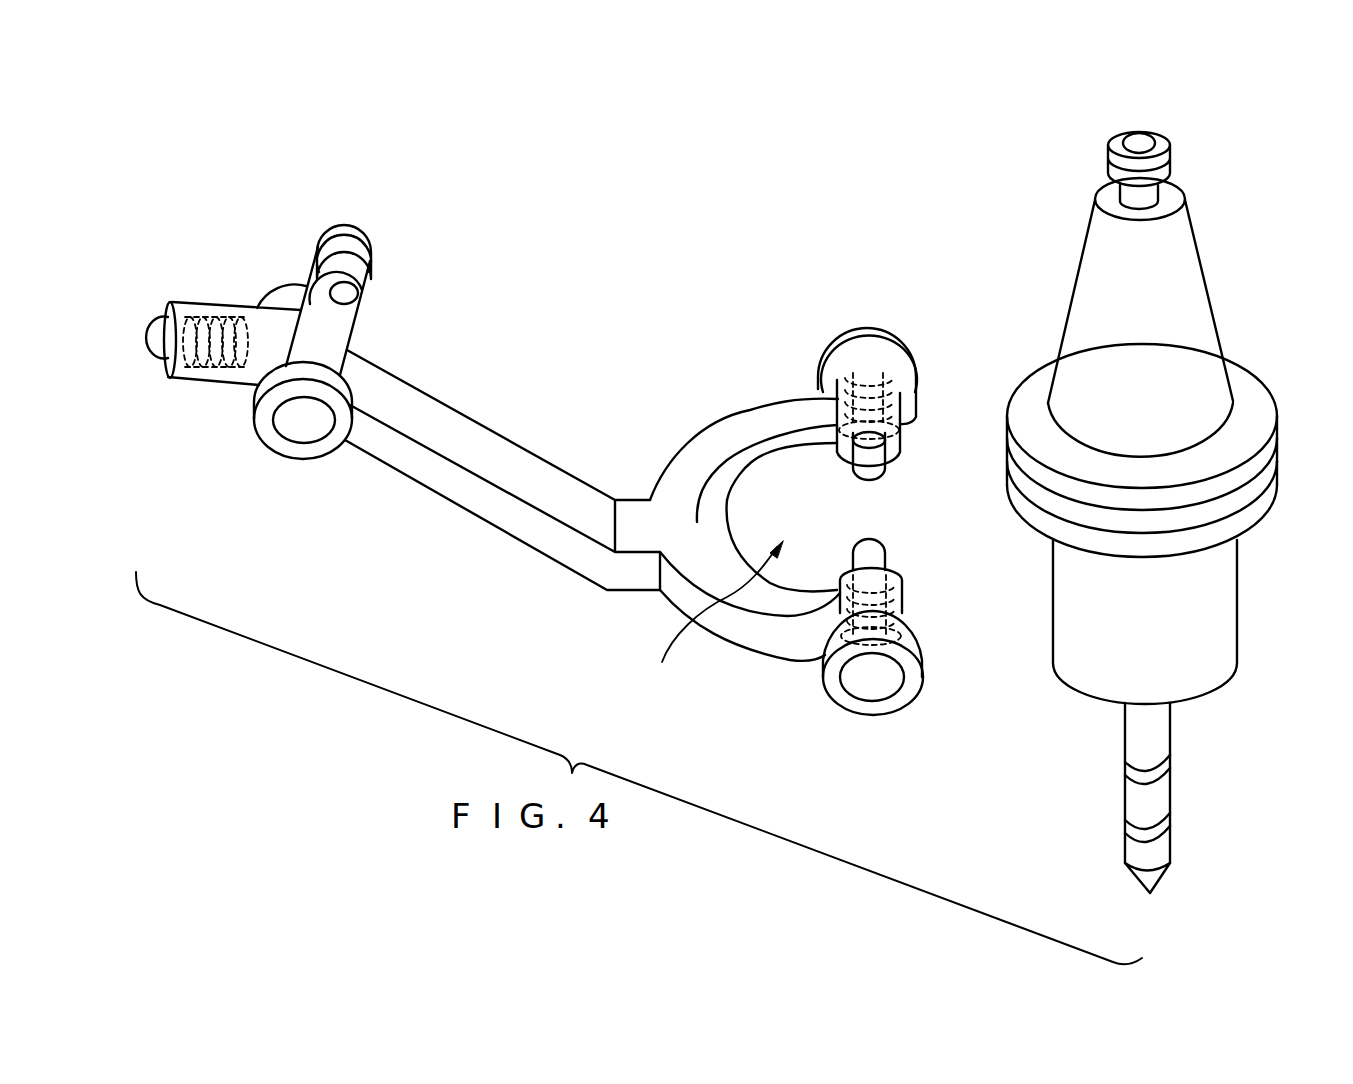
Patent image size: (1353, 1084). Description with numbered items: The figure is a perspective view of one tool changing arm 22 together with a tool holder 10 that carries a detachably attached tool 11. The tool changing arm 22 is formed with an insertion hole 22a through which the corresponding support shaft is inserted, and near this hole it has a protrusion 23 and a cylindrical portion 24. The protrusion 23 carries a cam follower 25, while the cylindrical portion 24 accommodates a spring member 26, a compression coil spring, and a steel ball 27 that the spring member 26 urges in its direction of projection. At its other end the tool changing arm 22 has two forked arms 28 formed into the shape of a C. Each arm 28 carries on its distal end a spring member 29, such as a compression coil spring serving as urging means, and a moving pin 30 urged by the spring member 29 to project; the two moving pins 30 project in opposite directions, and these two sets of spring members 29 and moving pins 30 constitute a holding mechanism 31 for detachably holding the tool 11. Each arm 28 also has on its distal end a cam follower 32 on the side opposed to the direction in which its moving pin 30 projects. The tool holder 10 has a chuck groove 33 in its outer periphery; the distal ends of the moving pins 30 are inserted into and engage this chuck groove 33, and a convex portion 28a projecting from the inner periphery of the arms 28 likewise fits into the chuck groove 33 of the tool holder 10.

The tool holder 10 is at (1193, 363).
The tool 11 is at (1170, 783).
The tool changing arm 22 is at (490, 513).
The insertion hole 22a is at (303, 432).
The protrusion 23 is at (348, 322).
The cylindrical portion 24 is at (202, 375).
The cam follower 25 is at (360, 243).
The spring member 26 is at (216, 316).
The steel ball 27 is at (158, 330).
The forked arms 28 is at (754, 412).
The convex portion 28a is at (711, 512).
The spring member 29 is at (869, 372).
The moving pin 30 is at (875, 472).
The holding mechanism 31 is at (711, 620).
The cam follower 32 is at (906, 357).
The chuck groove 33 is at (1238, 497).